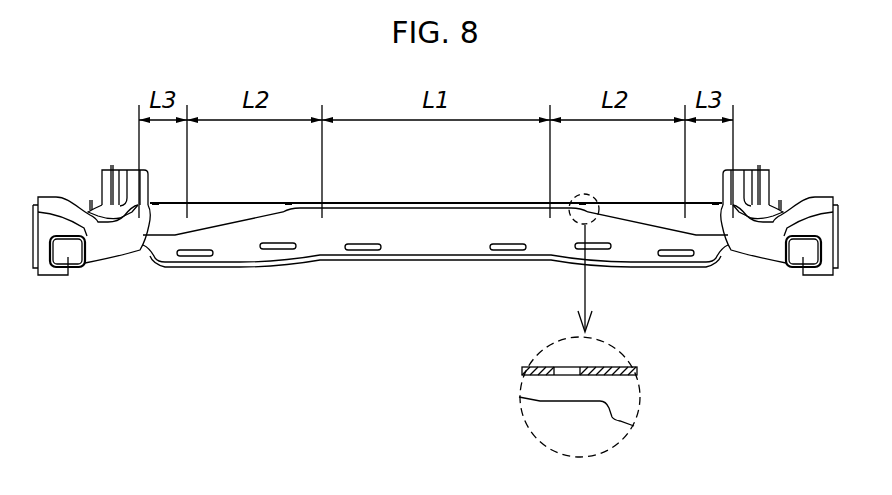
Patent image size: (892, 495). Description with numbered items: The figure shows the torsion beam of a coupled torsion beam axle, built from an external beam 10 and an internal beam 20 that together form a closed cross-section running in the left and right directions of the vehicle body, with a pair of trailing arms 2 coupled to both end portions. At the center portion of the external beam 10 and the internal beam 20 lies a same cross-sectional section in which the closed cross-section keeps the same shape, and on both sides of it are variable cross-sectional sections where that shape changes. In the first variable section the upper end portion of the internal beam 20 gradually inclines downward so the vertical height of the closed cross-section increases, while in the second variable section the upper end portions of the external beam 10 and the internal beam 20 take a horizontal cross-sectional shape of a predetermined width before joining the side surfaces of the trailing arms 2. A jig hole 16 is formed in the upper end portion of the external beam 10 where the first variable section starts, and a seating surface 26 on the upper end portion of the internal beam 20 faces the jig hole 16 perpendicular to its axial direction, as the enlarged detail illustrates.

The trailing arm 2 is at (104, 248).
The external beam 10 is at (441, 202).
The internal beam 20 is at (412, 237).
The jig hole 16 is at (580, 367).
The seating surface 26 is at (565, 400).